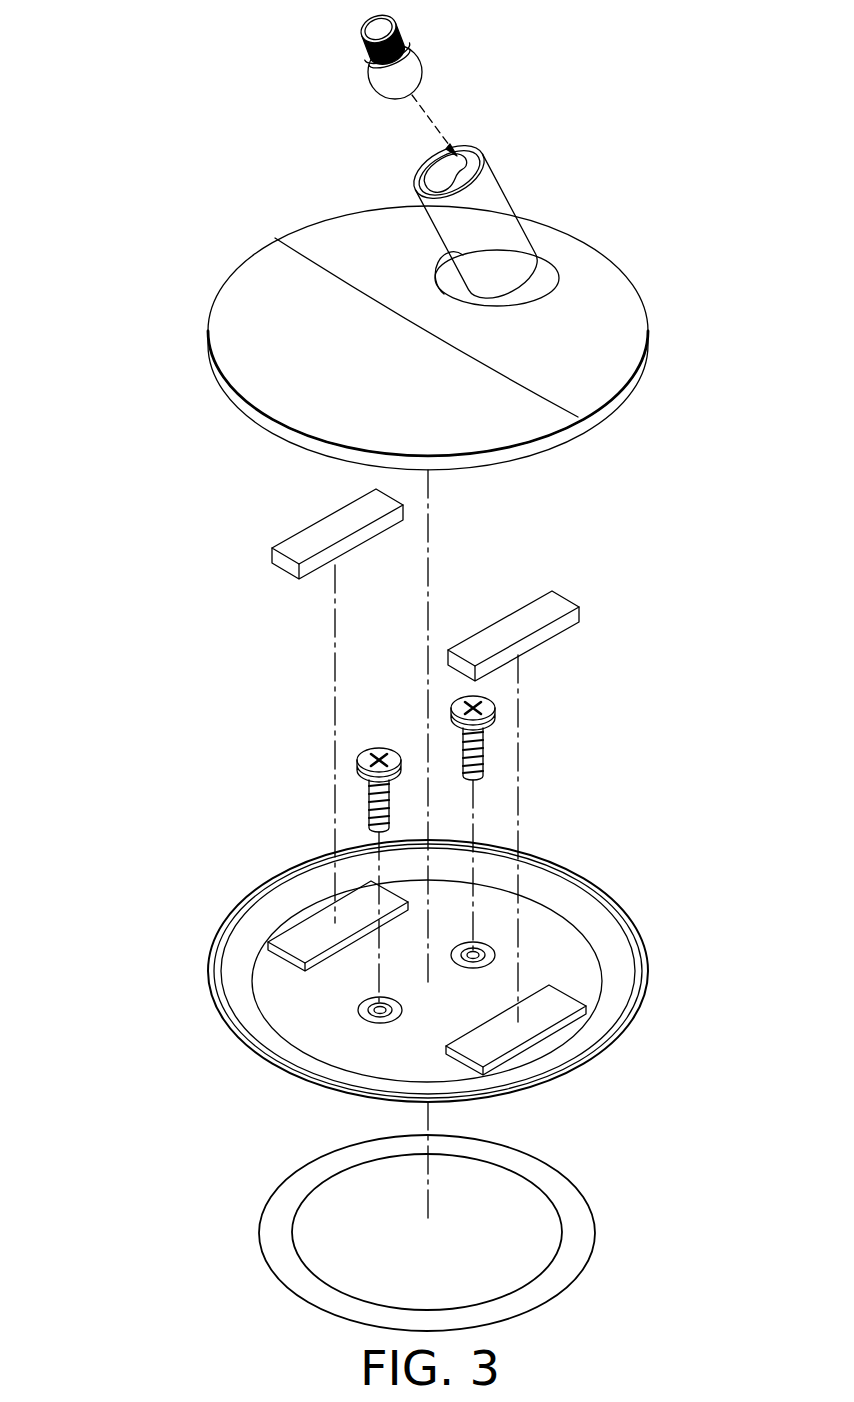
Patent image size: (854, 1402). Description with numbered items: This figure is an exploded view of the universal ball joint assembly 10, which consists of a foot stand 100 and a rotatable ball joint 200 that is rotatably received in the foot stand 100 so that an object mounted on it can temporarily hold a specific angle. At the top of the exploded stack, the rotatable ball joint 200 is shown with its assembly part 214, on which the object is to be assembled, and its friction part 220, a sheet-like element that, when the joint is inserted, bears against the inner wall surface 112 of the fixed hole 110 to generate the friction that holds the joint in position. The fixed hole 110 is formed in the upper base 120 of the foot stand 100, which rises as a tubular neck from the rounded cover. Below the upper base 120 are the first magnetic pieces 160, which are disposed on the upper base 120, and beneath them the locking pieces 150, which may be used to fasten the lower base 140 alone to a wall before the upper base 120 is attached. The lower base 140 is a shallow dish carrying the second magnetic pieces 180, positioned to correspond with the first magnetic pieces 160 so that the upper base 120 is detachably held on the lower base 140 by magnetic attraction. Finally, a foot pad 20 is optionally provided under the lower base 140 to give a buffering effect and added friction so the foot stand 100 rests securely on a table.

The universal ball joint assembly 10 is at (167, 227).
The foot pad 20 is at (580, 1240).
The foot stand 100 is at (752, 108).
The fixed hole 110 is at (458, 137).
The inner wall surface 112 is at (443, 185).
The upper base 120 is at (607, 332).
The lower base 140 is at (605, 927).
The locking piece 150 is at (483, 748).
The first magnetic piece 160 is at (557, 606).
The second magnetic piece 180 is at (562, 1005).
The rotatable ball joint 200 is at (240, 45).
The assembly part 214 is at (366, 52).
The friction part 220 is at (388, 90).